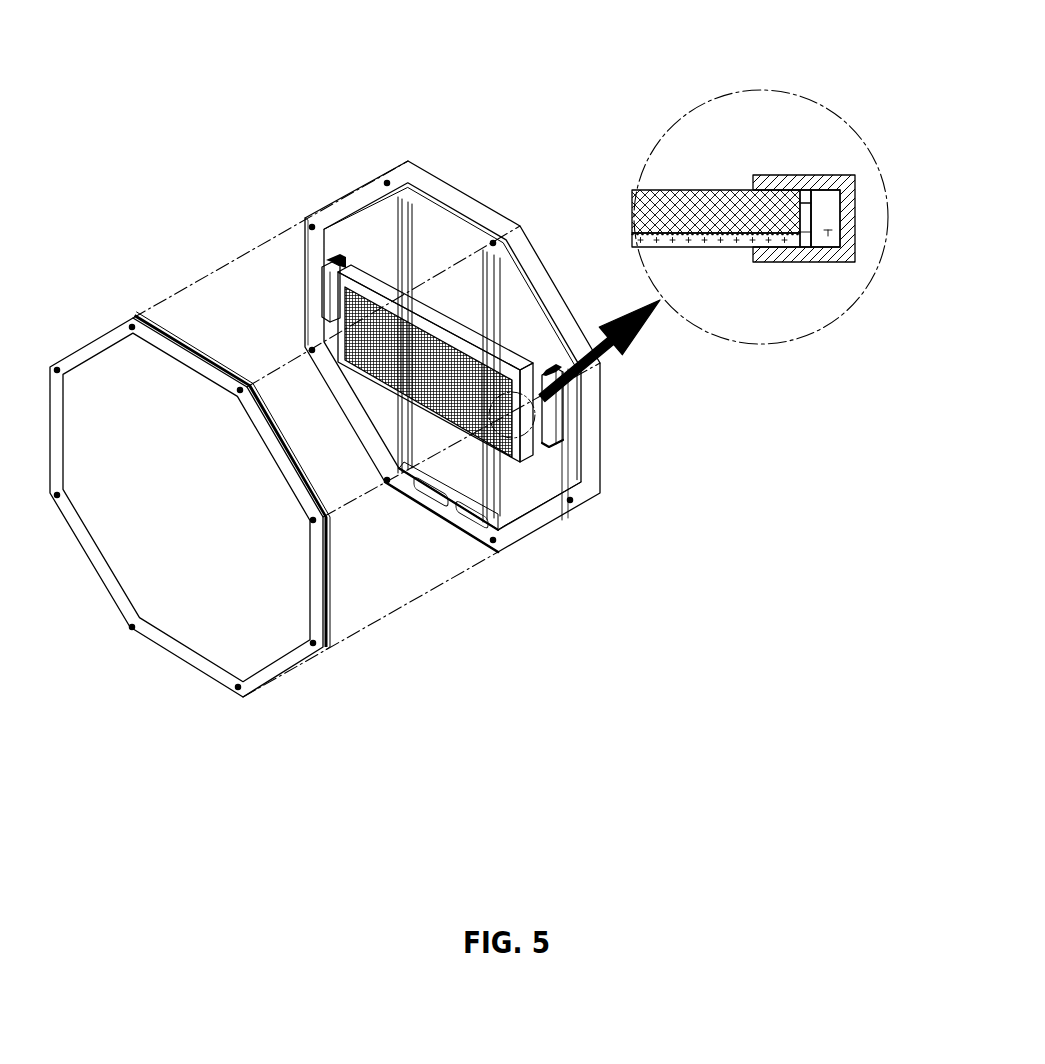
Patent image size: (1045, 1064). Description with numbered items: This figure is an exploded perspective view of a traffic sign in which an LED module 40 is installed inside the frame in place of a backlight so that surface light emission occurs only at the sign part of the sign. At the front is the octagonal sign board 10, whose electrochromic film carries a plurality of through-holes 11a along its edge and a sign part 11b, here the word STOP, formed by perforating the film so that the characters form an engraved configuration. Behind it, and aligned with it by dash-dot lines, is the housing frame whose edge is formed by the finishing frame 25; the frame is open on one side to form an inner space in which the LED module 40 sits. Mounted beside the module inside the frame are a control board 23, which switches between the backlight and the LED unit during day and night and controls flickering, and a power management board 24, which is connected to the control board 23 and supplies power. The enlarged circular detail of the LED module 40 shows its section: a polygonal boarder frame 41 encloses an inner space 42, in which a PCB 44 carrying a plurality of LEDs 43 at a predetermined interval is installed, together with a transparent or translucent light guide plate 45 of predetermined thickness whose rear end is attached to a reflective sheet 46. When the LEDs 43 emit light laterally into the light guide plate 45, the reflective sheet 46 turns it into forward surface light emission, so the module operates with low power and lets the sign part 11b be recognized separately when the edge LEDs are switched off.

The sign board 10 is at (200, 568).
The through-holes 11a is at (237, 688).
The sign part 11b is at (230, 567).
The control board 23 is at (557, 410).
The power management board 24 is at (333, 292).
The finishing frame 25 is at (337, 195).
The LED module 40 is at (453, 380).
The boarder frame 41 is at (808, 190).
The inner space 42 is at (830, 230).
The LEDs 43 is at (810, 213).
The PCB 44 is at (803, 240).
The light guide plate 45 is at (710, 190).
The reflective sheet 46 is at (725, 237).